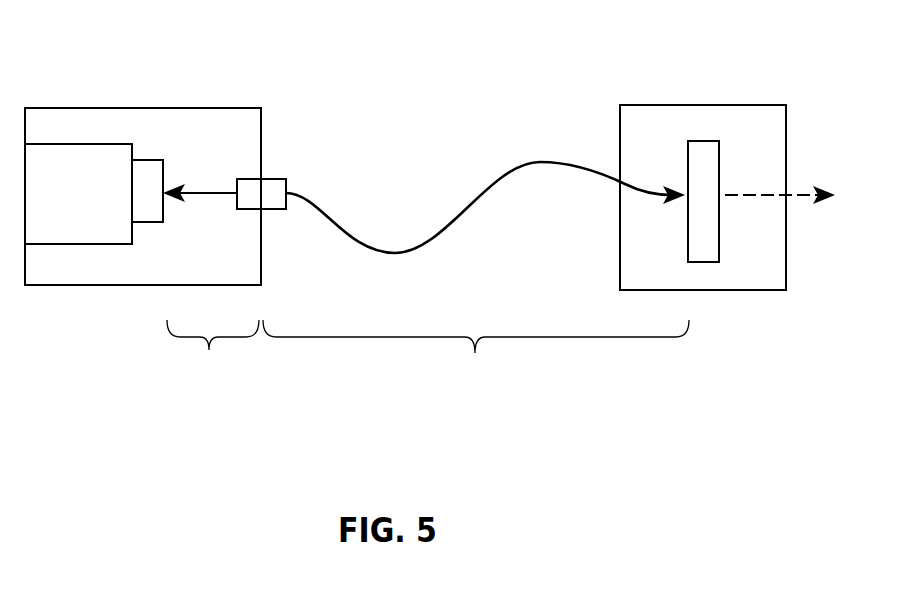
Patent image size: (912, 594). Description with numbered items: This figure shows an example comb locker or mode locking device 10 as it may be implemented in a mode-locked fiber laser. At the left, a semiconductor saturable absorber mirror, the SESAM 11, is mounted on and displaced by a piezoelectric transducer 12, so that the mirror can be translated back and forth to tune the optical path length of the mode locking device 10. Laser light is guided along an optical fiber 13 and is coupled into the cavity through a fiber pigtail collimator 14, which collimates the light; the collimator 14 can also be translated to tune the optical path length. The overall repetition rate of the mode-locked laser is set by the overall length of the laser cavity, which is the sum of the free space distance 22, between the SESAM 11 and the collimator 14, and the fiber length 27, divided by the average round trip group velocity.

The mode locking device 10 is at (268, 100).
The semiconductor saturable absorber mirror 11 is at (145, 211).
The piezoelectric transducer 12 is at (72, 216).
The optical fiber 13 is at (368, 240).
The fiber pigtail collimator 14 is at (283, 175).
The free space distance 22 is at (213, 353).
The fiber length 27 is at (476, 353).